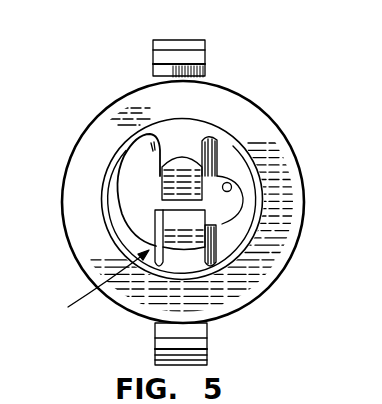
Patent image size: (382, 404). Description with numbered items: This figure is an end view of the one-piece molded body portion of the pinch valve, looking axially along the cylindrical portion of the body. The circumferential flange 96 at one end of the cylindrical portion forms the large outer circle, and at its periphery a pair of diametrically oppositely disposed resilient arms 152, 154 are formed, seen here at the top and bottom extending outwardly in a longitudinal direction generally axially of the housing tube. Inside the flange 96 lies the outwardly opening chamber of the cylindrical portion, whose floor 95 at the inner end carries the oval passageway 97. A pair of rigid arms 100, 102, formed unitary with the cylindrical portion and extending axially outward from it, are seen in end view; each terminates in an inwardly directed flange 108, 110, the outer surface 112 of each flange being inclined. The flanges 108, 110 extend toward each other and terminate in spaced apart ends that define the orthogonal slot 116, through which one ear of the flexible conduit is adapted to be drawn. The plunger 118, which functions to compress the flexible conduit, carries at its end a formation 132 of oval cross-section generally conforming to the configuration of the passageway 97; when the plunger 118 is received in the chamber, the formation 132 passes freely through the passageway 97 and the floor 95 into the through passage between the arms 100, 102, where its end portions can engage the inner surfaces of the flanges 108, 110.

The floor 95 is at (224, 150).
The circumferential flange 96 is at (290, 160).
The passageway 97 is at (252, 150).
The rigid arm 100 is at (218, 139).
The rigid arm 102 is at (133, 313).
The inwardly directed flange 108 is at (160, 170).
The inwardly directed flange 110 is at (165, 233).
The outer surface 112 is at (138, 190).
The orthogonal slot 116 is at (224, 211).
The plunger 118 is at (93, 288).
The formation 132 is at (142, 189).
The resilient arm 152 is at (207, 52).
The resilient arm 154 is at (207, 352).